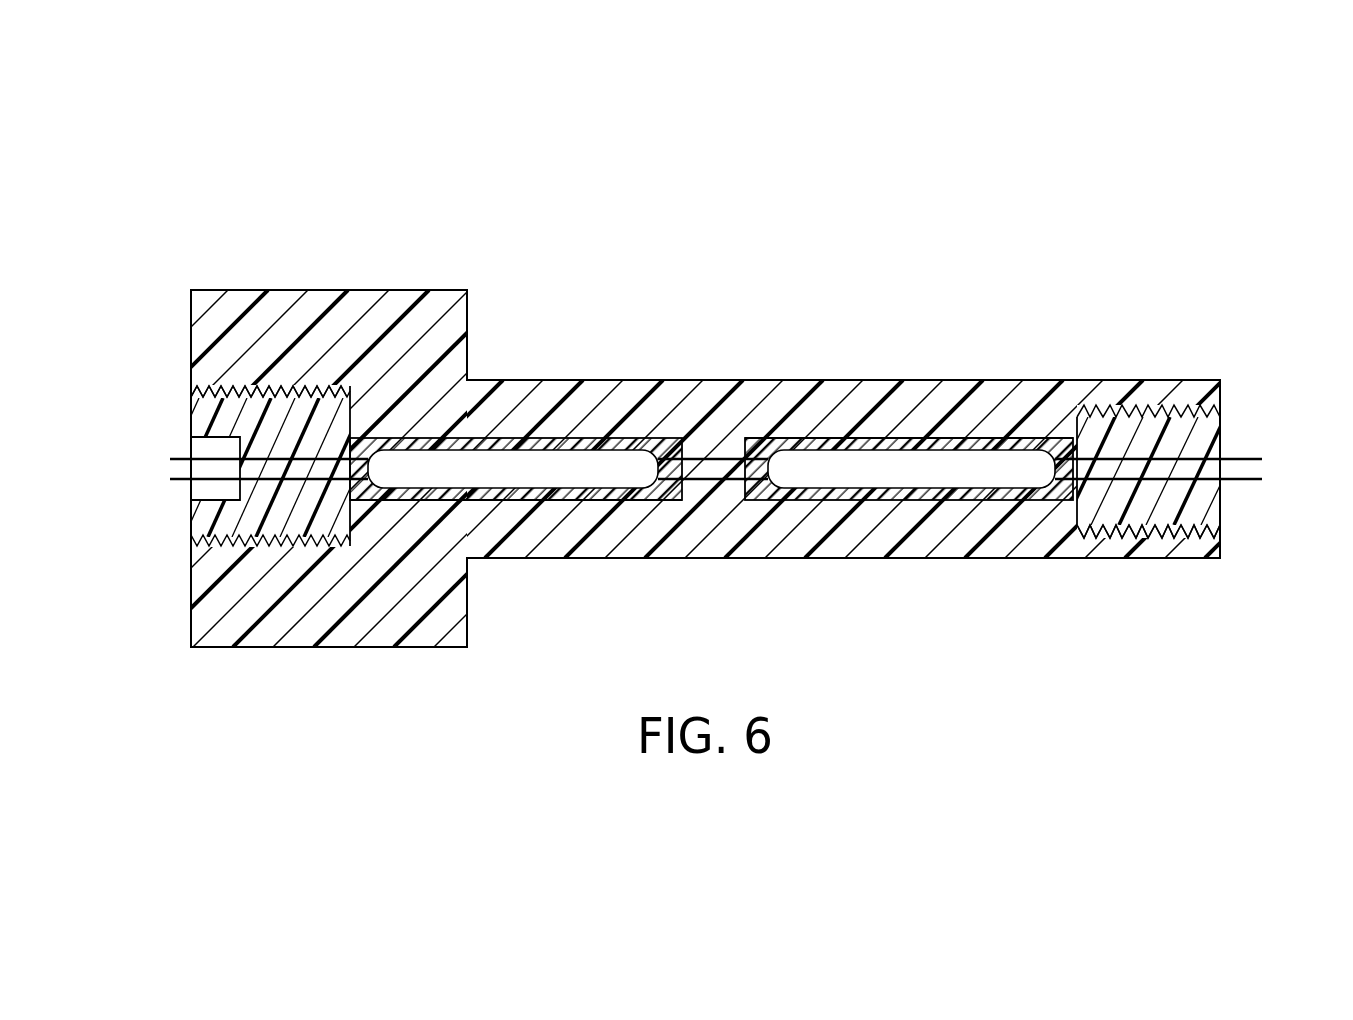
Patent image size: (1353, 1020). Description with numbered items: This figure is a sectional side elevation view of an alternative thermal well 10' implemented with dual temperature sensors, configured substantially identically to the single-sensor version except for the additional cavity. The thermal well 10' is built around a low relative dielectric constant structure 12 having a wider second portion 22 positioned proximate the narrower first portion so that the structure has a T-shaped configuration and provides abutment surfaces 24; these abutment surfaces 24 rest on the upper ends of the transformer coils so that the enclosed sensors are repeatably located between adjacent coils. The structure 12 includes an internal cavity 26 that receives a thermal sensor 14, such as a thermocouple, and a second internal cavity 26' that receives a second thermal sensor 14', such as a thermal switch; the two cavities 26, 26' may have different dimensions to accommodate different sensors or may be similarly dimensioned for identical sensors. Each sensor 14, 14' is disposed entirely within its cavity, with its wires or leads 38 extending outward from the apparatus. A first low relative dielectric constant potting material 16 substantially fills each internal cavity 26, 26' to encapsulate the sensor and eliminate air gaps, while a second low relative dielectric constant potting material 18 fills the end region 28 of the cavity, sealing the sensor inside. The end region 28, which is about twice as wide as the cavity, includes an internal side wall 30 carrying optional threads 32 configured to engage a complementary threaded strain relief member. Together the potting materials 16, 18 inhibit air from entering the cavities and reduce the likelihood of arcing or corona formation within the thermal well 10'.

The thermal well 10' is at (658, 382).
The low relative dielectric constant structure 12 is at (736, 362).
The thermal sensor 14 is at (513, 547).
The second thermal sensor 14' is at (911, 547).
The first low relative dielectric constant potting material 16 is at (880, 442).
The second low relative dielectric constant potting material 18 is at (268, 410).
The second portion 22 is at (361, 277).
The abutment surface 24 is at (470, 323).
The internal cavity 26 is at (516, 388).
The second internal cavity 26' is at (909, 388).
The end region 28 is at (202, 416).
The internal side wall 30 is at (268, 416).
The threads 32 is at (211, 392).
The wires or leads 38 is at (180, 450).